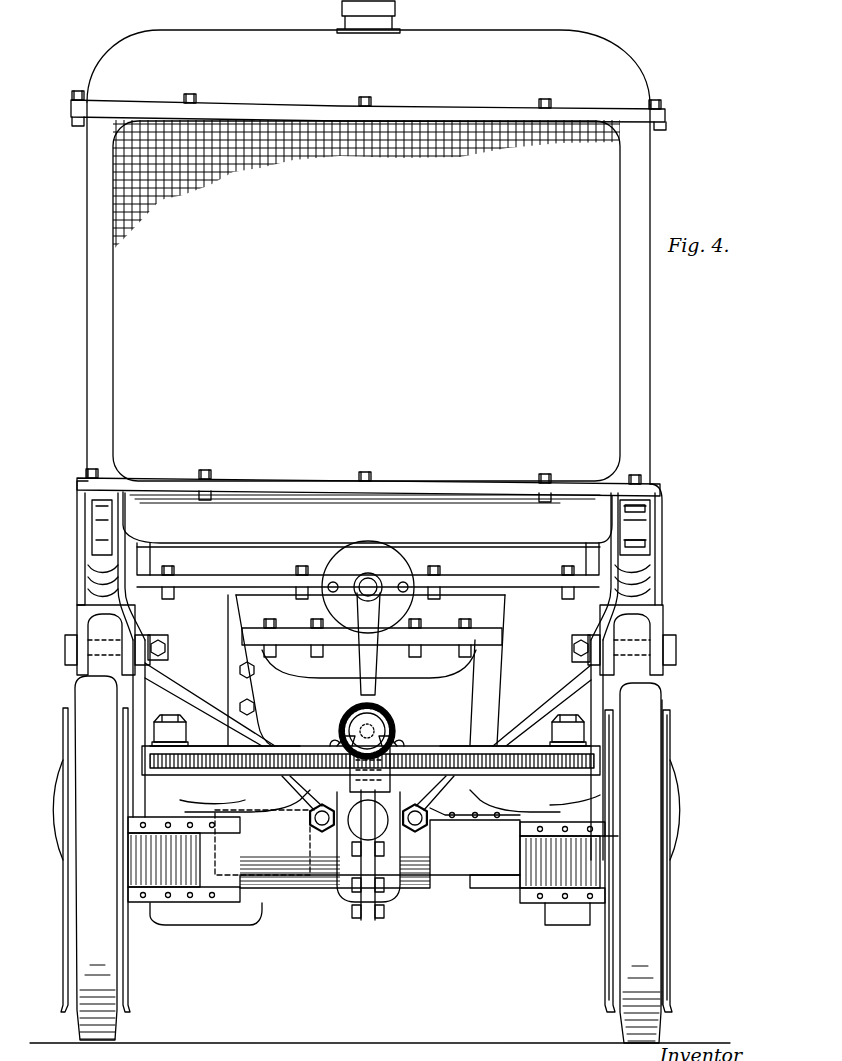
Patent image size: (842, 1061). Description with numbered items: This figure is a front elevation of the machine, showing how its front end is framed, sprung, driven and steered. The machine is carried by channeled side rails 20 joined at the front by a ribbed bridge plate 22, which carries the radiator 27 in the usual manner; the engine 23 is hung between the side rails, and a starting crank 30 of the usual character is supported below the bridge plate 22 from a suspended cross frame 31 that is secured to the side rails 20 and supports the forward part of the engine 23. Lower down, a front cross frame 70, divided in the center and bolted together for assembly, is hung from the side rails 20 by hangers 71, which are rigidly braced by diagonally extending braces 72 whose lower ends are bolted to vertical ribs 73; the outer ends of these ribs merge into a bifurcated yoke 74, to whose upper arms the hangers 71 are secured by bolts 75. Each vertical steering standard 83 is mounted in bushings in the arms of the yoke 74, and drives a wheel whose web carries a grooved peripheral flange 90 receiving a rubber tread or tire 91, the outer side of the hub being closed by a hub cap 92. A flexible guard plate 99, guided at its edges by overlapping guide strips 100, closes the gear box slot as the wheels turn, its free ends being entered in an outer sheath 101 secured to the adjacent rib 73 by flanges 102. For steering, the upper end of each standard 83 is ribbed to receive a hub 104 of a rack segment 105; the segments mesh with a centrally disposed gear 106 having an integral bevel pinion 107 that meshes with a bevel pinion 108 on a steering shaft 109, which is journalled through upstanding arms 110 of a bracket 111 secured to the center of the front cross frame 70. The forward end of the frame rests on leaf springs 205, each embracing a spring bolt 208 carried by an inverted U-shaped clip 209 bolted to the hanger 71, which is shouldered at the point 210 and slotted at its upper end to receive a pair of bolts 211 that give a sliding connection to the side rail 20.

The channeled side rails 20 is at (118, 528).
The ribbed bridge plate 22 is at (367, 519).
The engine 23 is at (366, 670).
The radiator 27 is at (368, 251).
The starting crank 30 is at (368, 618).
The suspended cross frame 31 is at (468, 586).
The front cross frame 70 is at (396, 905).
The hangers 71 is at (600, 708).
The diagonally extending braces 72 is at (578, 700).
The vertical ribs 73 is at (258, 810).
The bifurcated yoke 74 is at (608, 800).
The bolts 75 is at (605, 800).
The vertical steering standard 83 is at (369, 723).
The grooved peripheral flange 90 is at (665, 812).
The rubber tread or tire 91 is at (660, 840).
The hub cap 92 is at (664, 842).
The flexible guard plate 99 is at (519, 877).
The overlapping guide strips 100 is at (605, 840).
The outer sheath 101 is at (450, 892).
The flanges 102 is at (458, 880).
The hub 104 is at (150, 762).
The rack segment 105 is at (275, 746).
The centrally disposed gear 106 is at (350, 744).
The bevel pinion 107 is at (345, 747).
The bevel pinion 108 is at (380, 720).
The steering shaft 109 is at (375, 730).
The upstanding arms 110 is at (385, 746).
The bracket 111 is at (392, 786).
The leaf springs 205 is at (655, 600).
The spring bolt 208 is at (668, 652).
The inverted U-shaped clip 209 is at (660, 636).
The shoulder point 210 is at (596, 618).
The bolts 211 is at (648, 508).